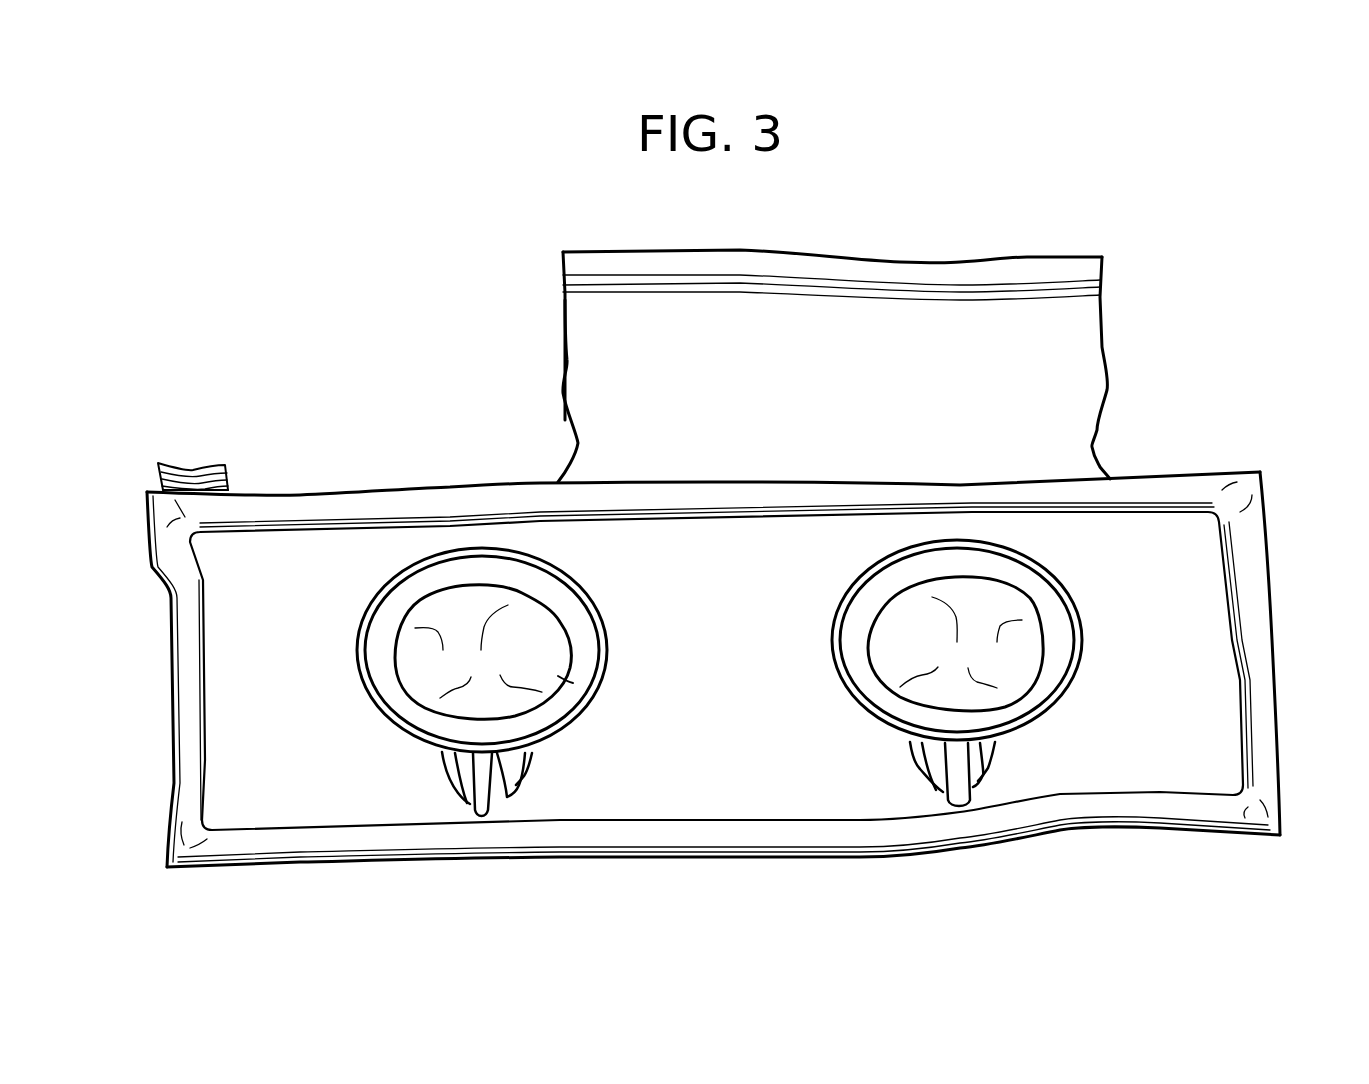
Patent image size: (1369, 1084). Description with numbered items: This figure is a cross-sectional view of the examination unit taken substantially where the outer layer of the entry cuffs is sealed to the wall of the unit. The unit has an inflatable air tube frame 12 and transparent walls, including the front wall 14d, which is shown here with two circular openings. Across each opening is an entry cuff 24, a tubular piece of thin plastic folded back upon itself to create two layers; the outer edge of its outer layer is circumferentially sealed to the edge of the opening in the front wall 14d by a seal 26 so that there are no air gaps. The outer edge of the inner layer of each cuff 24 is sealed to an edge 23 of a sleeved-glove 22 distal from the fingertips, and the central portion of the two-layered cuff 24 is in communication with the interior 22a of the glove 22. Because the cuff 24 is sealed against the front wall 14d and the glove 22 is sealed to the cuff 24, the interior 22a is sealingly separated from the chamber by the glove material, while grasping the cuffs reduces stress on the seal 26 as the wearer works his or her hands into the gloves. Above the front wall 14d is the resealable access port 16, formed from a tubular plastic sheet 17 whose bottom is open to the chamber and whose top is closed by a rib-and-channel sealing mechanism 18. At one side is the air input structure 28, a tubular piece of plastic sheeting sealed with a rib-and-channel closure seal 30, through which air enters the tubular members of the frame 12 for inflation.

The inflatable air tube frame 12 is at (1266, 663).
The front wall 14d is at (1193, 522).
The resealable access port 16 is at (1128, 358).
The plastic sheet 17 is at (596, 359).
The sealing mechanism 18 is at (932, 294).
The sleeved-gloves 22 is at (934, 766).
The interior of the glove 22a is at (425, 670).
The edge of the gloves 23 is at (571, 678).
The entry cuffs 24 is at (382, 620).
The seal 26 is at (566, 593).
The air input structure 28 is at (140, 474).
The rib-and-channel type closure seal 30 is at (193, 474).